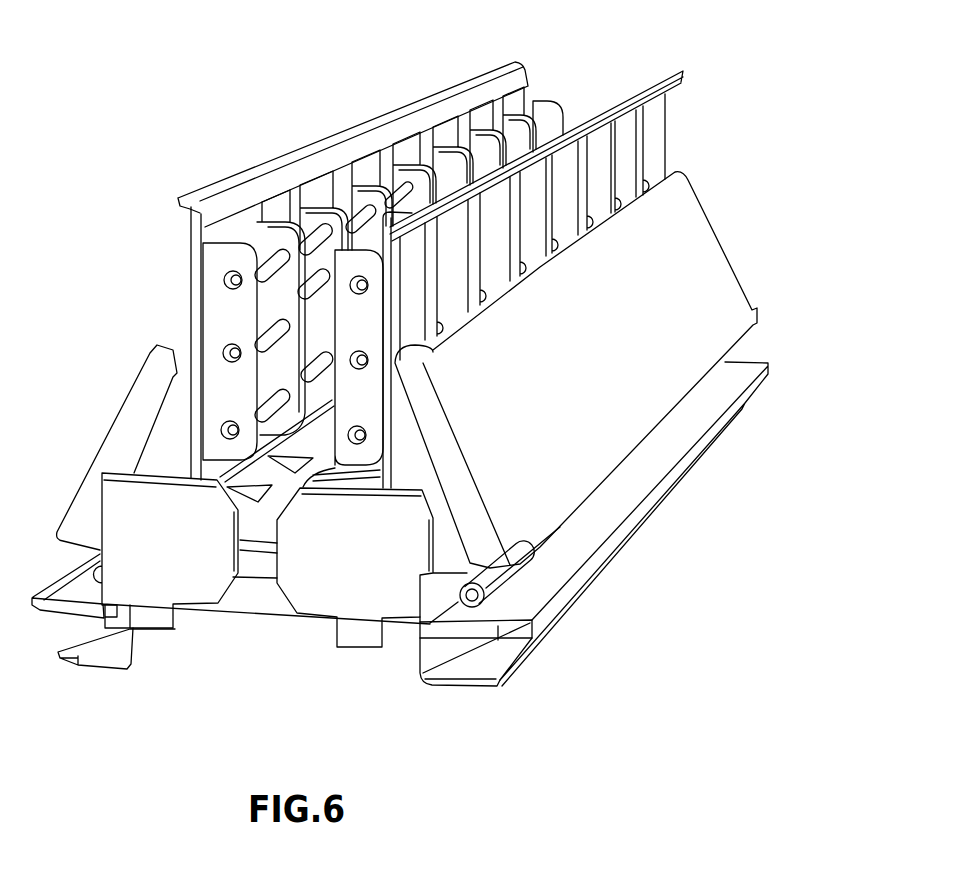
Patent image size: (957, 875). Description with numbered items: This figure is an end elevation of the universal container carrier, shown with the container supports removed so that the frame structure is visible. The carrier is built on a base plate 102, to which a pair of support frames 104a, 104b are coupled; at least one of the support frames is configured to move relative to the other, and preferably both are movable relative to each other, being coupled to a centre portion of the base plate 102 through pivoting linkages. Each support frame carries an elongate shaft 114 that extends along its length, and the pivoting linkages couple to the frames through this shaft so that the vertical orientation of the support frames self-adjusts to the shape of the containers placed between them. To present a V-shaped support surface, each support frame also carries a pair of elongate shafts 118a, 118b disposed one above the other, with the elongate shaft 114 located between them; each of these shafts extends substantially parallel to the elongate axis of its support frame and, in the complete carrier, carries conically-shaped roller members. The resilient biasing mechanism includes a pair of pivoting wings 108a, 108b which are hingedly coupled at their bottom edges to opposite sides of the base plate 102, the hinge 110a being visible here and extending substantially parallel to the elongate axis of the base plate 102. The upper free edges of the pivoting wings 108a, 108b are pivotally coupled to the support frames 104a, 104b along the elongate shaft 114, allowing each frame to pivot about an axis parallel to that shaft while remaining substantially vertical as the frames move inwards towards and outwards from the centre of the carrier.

The base plate 102 is at (490, 640).
The support frame 104a is at (681, 70).
The support frame 104b is at (514, 62).
The pivoting wing 108a is at (708, 258).
The pivoting wing 108b is at (118, 423).
The hinge 110a is at (461, 598).
The elongate shaft 114 is at (226, 350).
The elongate shaft 118a is at (226, 275).
The elongate shaft 118b is at (224, 425).